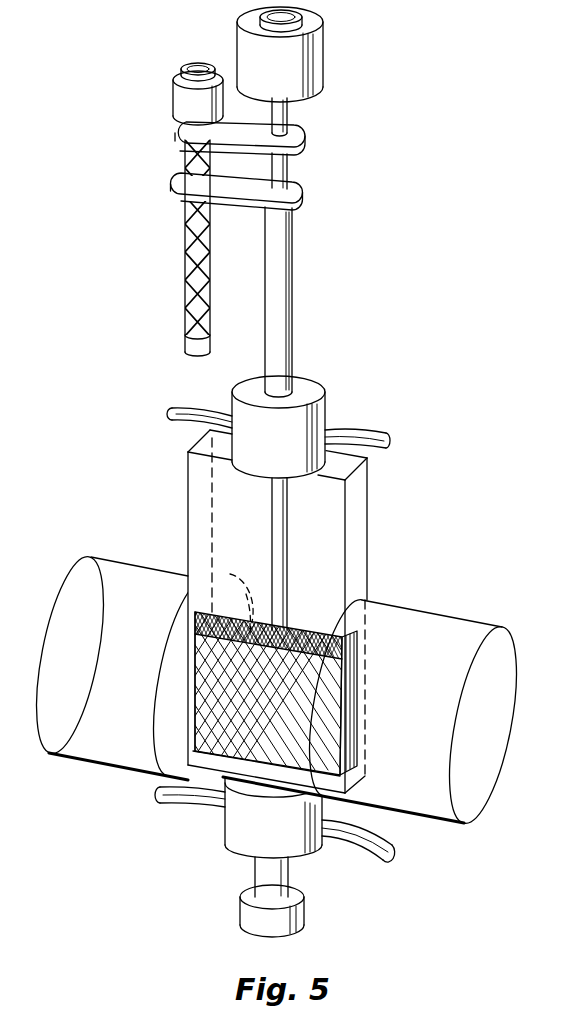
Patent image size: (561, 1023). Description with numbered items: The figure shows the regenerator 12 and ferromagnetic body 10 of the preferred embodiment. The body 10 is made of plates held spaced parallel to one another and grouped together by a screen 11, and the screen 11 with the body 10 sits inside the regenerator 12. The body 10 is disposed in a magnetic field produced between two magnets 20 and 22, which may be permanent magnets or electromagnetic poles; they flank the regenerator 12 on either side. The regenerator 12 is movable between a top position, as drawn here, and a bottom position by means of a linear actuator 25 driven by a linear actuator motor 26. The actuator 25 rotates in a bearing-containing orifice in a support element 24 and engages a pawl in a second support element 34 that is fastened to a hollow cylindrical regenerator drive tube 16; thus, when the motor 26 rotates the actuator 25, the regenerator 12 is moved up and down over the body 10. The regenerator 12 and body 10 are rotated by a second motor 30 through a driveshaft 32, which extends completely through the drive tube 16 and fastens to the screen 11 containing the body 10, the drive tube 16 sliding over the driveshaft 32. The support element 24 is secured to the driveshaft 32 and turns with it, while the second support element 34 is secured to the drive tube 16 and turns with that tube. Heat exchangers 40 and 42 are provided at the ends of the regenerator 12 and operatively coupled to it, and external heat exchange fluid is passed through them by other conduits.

The ferromagnetic body 10 is at (308, 632).
The screen 11 is at (197, 587).
The regenerator 12 is at (257, 534).
The regenerator drive tube 16 is at (294, 311).
The magnet 20 is at (123, 677).
The magnet 22 is at (417, 709).
The support element 24 is at (307, 128).
The linear actuator 25 is at (185, 264).
The linear actuator motor 26 is at (182, 100).
The second motor 30 is at (246, 50).
The driveshaft 32 is at (290, 169).
The second support element 34 is at (247, 198).
The heat exchanger 40 is at (284, 452).
The heat exchanger 42 is at (247, 835).